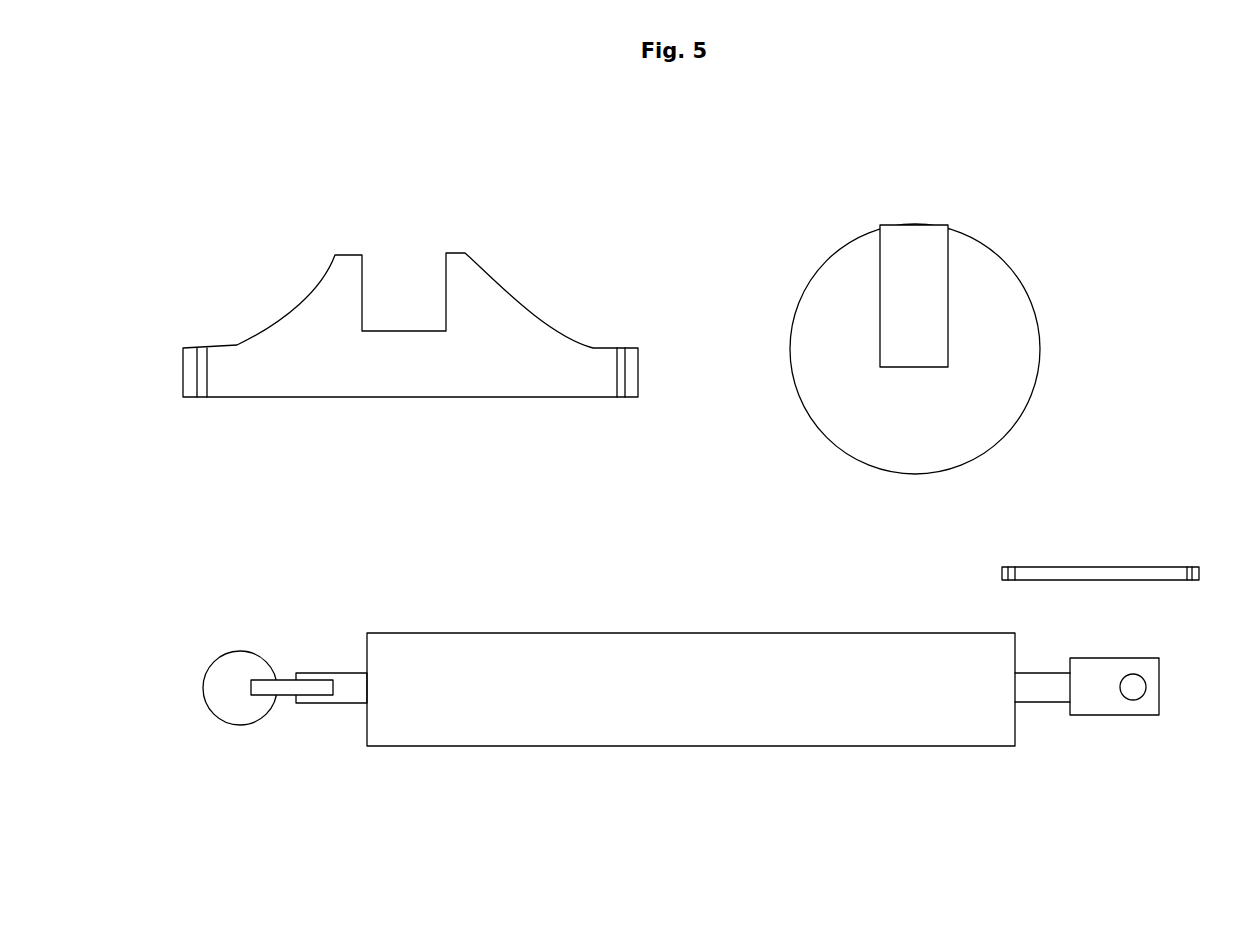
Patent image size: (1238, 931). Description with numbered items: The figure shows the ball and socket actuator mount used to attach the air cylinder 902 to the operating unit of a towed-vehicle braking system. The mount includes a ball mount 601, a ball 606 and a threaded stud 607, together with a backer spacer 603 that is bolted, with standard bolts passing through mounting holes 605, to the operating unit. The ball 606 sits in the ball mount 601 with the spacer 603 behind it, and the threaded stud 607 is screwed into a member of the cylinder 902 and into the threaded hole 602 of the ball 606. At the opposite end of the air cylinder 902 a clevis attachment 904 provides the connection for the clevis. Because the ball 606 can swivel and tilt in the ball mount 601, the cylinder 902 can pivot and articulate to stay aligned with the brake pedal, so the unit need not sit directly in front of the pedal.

The ball mount 601 is at (345, 252).
The threaded hole 602 is at (912, 225).
The spacer 603 is at (1097, 565).
The mounting holes 605 is at (1187, 567).
The ball 606 is at (1042, 347).
The stud 607 is at (283, 678).
The air cylinder 902 is at (692, 750).
The clevis attachment 904 is at (1112, 718).